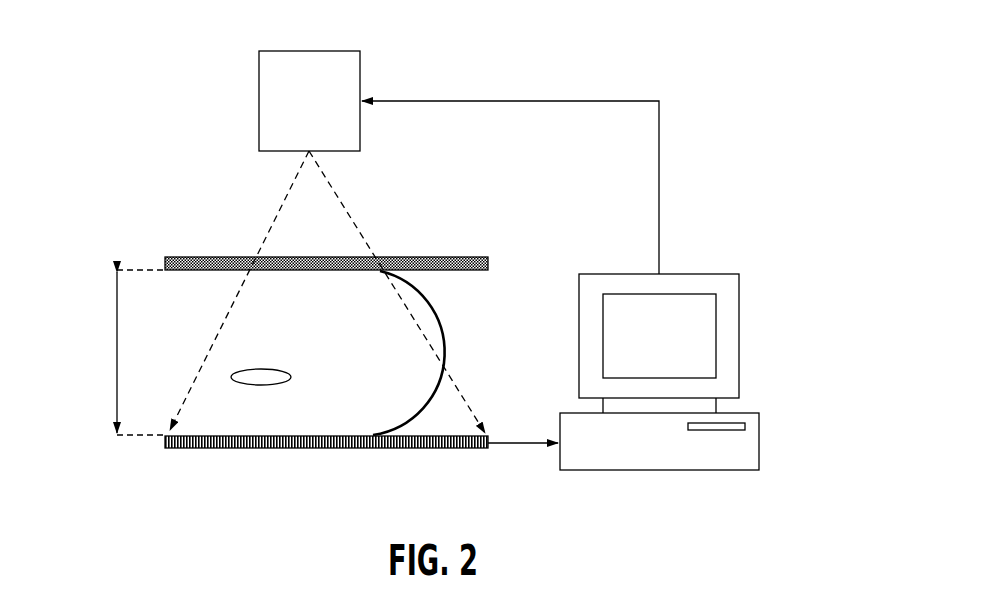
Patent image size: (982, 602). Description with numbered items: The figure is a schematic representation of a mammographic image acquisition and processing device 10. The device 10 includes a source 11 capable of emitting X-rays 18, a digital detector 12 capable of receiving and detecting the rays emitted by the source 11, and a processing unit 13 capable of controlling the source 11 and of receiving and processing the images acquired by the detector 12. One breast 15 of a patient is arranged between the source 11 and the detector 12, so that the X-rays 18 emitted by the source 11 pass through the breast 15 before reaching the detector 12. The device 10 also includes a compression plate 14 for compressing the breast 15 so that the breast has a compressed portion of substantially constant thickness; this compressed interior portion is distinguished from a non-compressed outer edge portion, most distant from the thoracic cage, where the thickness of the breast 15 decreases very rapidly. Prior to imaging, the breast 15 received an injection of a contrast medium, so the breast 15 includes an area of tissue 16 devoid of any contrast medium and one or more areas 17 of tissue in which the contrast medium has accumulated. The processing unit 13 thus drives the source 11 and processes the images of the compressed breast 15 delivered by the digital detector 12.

The mammographic image acquisition and processing device 10 is at (152, 163).
The source 11 is at (259, 88).
The digital detector 12 is at (165, 440).
The processing unit 13 is at (740, 302).
The compression plate 14 is at (165, 262).
The breast 15 is at (422, 415).
The area of tissue devoid of contrast medium 16 is at (385, 339).
The area of tissue with accumulated contrast medium 17 is at (250, 368).
The X-rays 18 is at (351, 215).